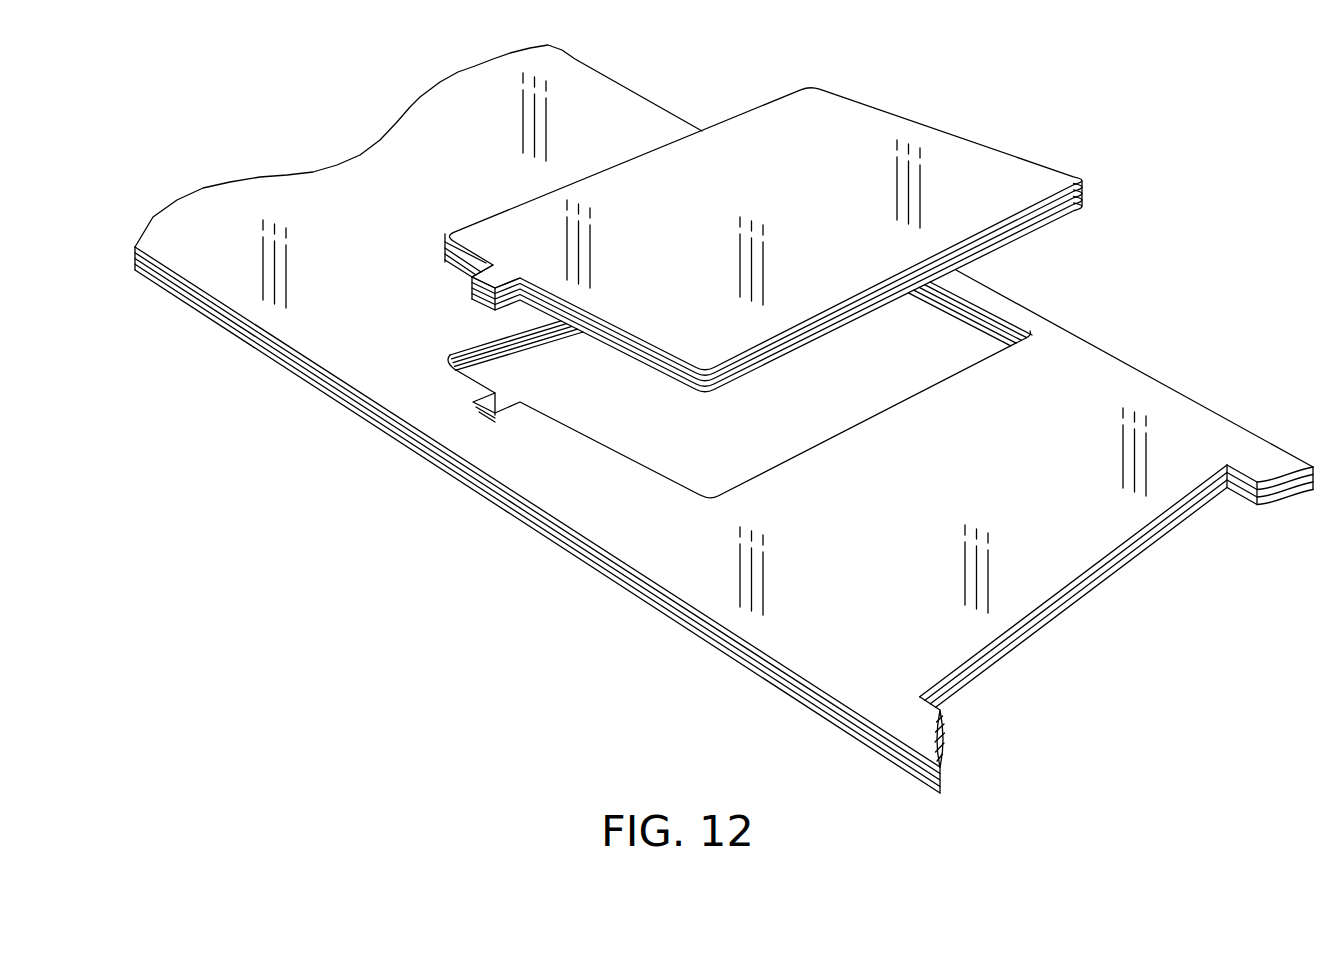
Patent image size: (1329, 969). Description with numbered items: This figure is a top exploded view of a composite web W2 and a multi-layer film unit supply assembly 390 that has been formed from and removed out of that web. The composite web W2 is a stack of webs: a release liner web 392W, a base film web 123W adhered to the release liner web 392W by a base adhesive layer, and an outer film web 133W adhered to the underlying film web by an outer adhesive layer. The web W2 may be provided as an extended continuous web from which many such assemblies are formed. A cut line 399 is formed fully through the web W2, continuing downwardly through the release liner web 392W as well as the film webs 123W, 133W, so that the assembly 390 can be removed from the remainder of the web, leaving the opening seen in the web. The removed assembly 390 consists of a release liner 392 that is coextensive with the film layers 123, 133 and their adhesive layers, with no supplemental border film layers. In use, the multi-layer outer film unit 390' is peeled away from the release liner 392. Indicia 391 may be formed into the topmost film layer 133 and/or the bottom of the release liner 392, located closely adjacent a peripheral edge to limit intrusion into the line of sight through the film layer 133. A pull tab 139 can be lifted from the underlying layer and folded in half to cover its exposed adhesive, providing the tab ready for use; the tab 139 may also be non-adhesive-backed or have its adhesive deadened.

The film unit supply assembly 390 is at (724, 413).
The multi-layer outer film unit 390' is at (760, 240).
The release liner 392 is at (1065, 218).
The indicia 391 is at (914, 252).
The pull tab 139 is at (492, 262).
The film layer 123 is at (547, 310).
The outer film layer 133 is at (683, 377).
The cut line 399 is at (893, 407).
The release liner web 392W is at (320, 393).
The base film web 123W is at (387, 432).
The outer film web 133W is at (543, 533).
The composite web W2 is at (680, 640).